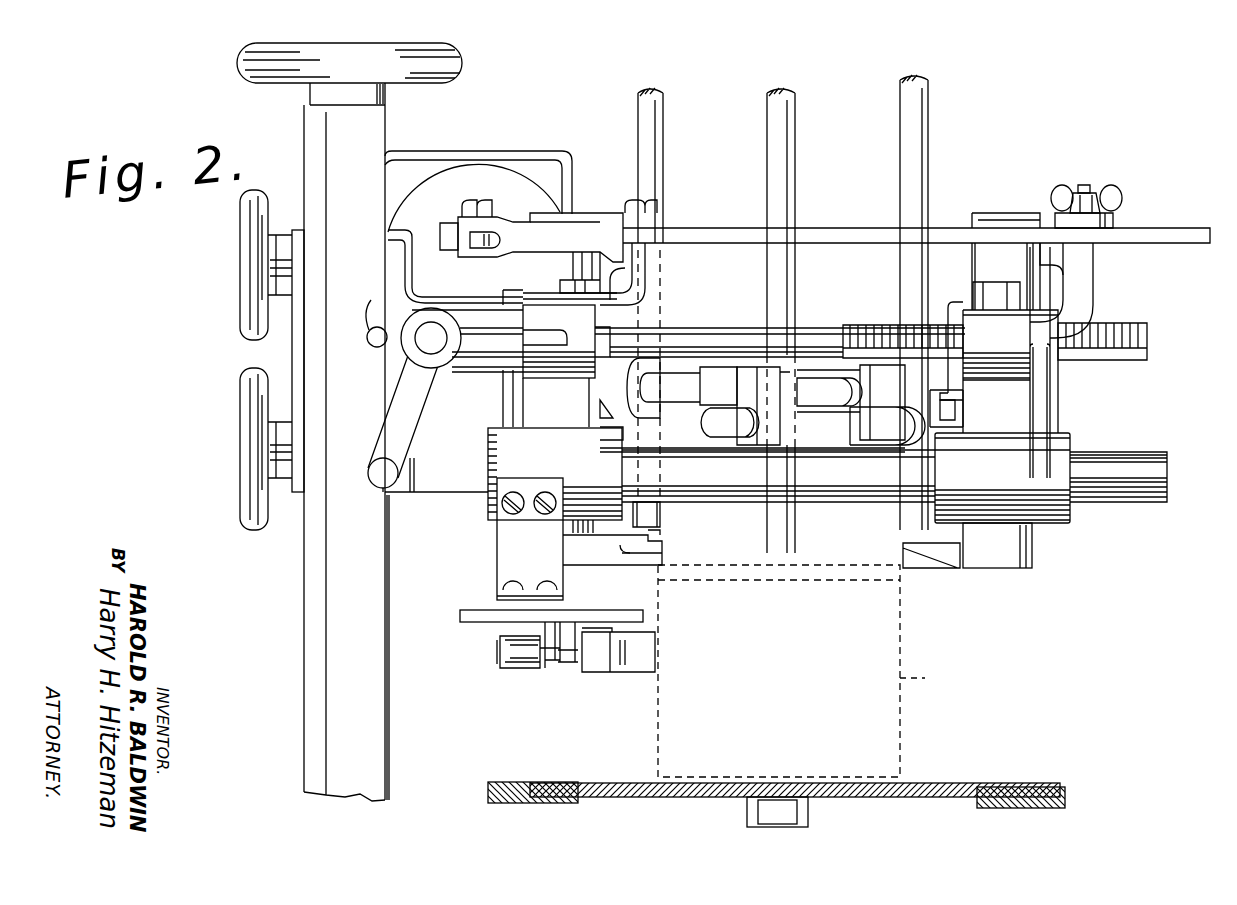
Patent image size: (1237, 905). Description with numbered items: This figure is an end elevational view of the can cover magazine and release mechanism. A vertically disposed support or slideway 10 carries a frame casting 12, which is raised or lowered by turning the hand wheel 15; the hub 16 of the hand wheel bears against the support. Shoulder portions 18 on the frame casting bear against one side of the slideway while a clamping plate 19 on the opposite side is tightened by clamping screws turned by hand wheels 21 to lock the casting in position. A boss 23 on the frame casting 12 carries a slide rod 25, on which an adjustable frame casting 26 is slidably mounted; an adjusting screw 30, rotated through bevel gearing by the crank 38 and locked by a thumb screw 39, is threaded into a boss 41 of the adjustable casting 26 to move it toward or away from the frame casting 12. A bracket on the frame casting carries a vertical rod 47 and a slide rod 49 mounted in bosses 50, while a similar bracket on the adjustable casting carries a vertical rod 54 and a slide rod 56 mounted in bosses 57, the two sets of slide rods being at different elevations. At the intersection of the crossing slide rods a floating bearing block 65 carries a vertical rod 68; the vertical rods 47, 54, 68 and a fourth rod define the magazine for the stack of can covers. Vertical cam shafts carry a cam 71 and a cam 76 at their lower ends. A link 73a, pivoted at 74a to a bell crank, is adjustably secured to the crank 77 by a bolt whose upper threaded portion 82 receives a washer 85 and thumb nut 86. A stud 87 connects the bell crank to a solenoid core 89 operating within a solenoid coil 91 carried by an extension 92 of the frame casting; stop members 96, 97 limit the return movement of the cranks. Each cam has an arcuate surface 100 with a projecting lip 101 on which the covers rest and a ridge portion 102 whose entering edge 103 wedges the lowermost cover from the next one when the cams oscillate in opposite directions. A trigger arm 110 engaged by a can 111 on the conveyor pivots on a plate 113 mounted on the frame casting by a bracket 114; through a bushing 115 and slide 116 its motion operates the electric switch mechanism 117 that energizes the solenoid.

The support or slideway 10 is at (335, 632).
The frame casting 12 is at (435, 492).
The hand wheel 15 is at (240, 65).
The hub 16 is at (388, 100).
The shoulder portions 18 is at (395, 498).
The clamping plate 19 is at (292, 355).
The hand wheels 21 is at (242, 302).
The boss 23 is at (580, 474).
The slide rod 25 is at (1133, 488).
The adjustable frame casting 26 is at (1012, 420).
The adjusting screw 30 is at (735, 332).
The crank 38 is at (398, 415).
The thumb screw 39 is at (371, 310).
The boss 41 is at (1000, 375).
The vertical rod 47 is at (663, 122).
The slide rod 49 is at (848, 393).
The bosses 50 is at (612, 382).
The vertical rod 54 is at (930, 125).
The slide rod 56 is at (705, 425).
The bosses 57 is at (906, 417).
The floating bearing block 65 is at (790, 372).
The vertical rod 68 is at (795, 120).
The cam 71 is at (583, 565).
The link 73a is at (830, 236).
The pivot 74a is at (650, 205).
The cam 76 is at (1030, 568).
The crank 77 is at (1110, 226).
The upper threaded portion 82 is at (1088, 184).
The washer 85 is at (1110, 215).
The thumb nut 86 is at (1112, 196).
The stud 87 is at (490, 205).
The solenoid core 89 is at (443, 228).
The solenoid coil 91 is at (515, 190).
The extension 92 is at (492, 152).
The stop member 96 is at (640, 275).
The stop member 97 is at (1093, 272).
The arcuate surface 100 is at (668, 575).
The projecting lip 101 is at (665, 550).
The ridge portion 102 is at (908, 548).
The entering edge 103 is at (660, 534).
The trigger arm 110 is at (645, 672).
The can 111 is at (935, 678).
The plate 113 is at (468, 620).
The bracket 114 is at (497, 573).
The bushing 115 is at (567, 665).
The slide 116 is at (552, 668).
The electric switch mechanism 117 is at (510, 668).